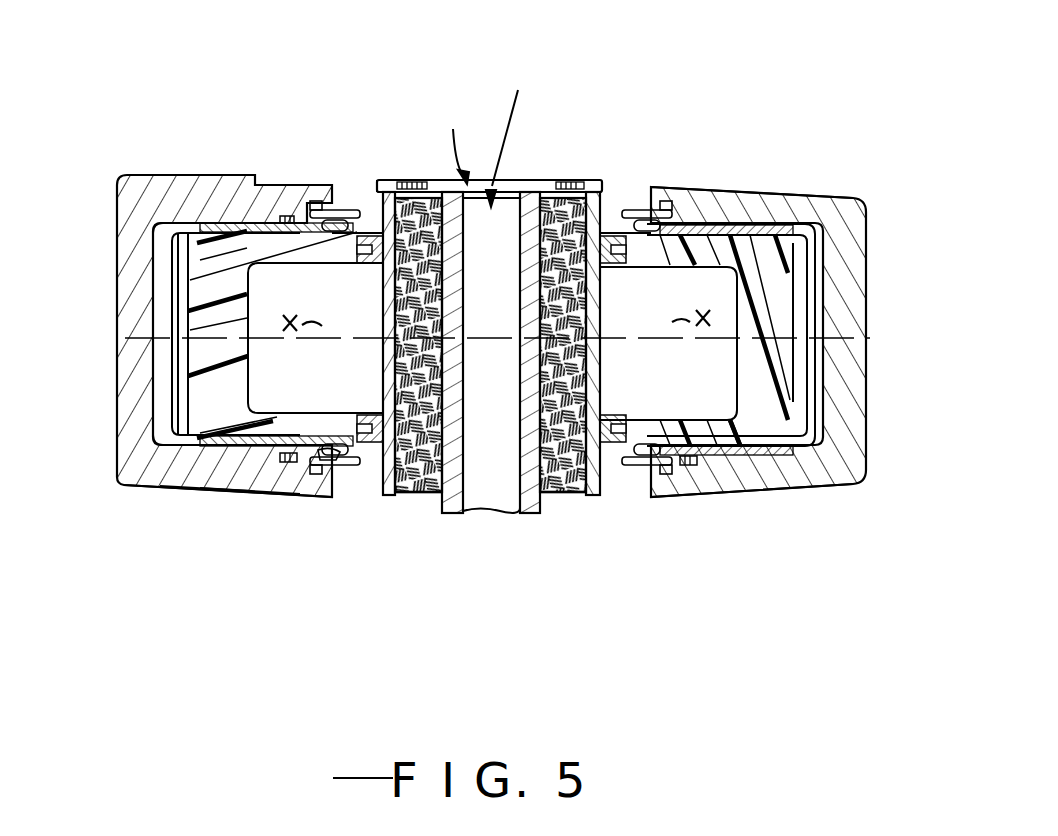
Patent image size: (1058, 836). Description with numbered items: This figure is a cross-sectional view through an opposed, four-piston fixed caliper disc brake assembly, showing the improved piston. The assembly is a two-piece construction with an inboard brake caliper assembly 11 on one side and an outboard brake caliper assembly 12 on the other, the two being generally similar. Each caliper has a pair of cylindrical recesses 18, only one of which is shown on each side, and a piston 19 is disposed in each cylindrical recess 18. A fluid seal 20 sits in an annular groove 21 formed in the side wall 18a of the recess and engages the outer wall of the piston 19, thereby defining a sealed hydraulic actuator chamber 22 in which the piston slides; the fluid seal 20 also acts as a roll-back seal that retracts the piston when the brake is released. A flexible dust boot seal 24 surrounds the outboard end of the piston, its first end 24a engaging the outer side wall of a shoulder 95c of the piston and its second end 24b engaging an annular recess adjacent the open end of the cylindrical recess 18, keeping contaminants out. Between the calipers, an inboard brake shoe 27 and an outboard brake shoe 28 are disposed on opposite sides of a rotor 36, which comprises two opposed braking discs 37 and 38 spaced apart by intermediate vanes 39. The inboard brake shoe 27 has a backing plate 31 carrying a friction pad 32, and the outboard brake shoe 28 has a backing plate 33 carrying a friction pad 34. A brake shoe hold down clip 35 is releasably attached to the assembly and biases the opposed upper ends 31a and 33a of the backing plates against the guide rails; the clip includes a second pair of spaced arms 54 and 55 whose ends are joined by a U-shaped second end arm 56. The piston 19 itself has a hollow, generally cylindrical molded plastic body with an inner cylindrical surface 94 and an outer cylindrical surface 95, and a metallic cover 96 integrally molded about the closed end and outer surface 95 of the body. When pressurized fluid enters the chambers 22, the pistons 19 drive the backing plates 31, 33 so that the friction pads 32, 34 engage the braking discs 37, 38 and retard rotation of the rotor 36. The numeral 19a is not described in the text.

The inboard brake caliper assembly 11 is at (866, 287).
The outboard brake caliper assembly 12 is at (118, 428).
The cylindrical recess 18 is at (182, 493).
The side wall of the cylindrical recess 18a is at (181, 175).
The piston 19 is at (215, 320).
The boot lower portion 19a is at (747, 497).
The fluid seal 20 is at (288, 493).
The annular groove 21 is at (244, 175).
The hydraulic actuator chamber 22 is at (162, 282).
The dust boot seal 24 is at (363, 180).
The first end of the dust boot seal 24a is at (350, 238).
The second end of the dust boot seal 24b is at (333, 205).
The inboard brake shoe 27 is at (592, 500).
The outboard brake shoe 28 is at (407, 505).
The backing plate 31 is at (602, 494).
The upper end of the backing plate 31a is at (603, 190).
The friction pad 32 is at (577, 505).
The backing plate 33 is at (383, 478).
The upper end of the backing plate 33a is at (383, 182).
The friction pad 34 is at (433, 498).
The brake shoe hold down clip 35 is at (461, 138).
The rotor 36 is at (512, 130).
The braking disc 37 is at (452, 515).
The braking disc 38 is at (524, 515).
The intermediate vanes 39 is at (484, 512).
The arm 54 is at (405, 180).
The arm 55 is at (565, 180).
The second end arm 56 is at (520, 178).
The inner cylindrical surface 94 is at (278, 408).
The outer cylindrical surface 95 is at (240, 493).
The shoulder of the piston 95c is at (330, 452).
The cover 96 is at (205, 495).